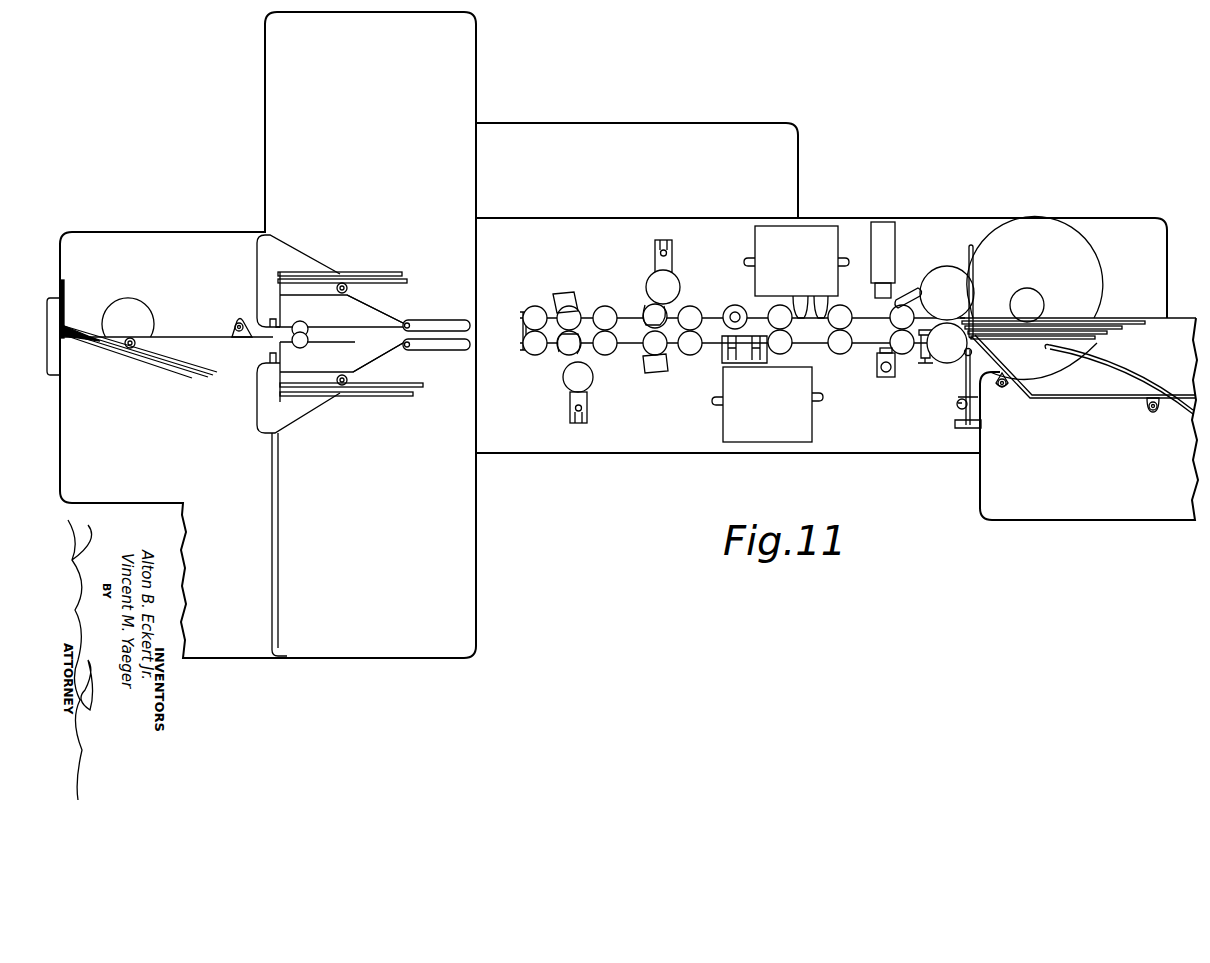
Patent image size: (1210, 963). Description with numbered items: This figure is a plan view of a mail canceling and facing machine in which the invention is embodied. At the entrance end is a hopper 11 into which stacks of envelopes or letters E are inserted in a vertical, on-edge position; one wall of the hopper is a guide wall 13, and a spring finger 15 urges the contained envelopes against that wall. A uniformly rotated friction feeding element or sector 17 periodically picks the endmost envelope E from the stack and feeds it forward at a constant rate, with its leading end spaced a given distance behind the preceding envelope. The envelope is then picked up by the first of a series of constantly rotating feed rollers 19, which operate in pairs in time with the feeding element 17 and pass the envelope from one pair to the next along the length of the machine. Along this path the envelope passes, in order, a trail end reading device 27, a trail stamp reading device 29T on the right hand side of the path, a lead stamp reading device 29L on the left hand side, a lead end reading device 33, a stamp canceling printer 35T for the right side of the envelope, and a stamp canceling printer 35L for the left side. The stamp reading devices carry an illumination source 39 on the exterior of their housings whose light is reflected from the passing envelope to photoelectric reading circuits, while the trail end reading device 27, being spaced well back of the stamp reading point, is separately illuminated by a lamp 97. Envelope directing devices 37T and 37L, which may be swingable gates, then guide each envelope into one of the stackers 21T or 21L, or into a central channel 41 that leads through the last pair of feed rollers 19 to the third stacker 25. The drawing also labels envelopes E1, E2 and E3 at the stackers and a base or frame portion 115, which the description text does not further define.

The hopper 11 is at (1075, 391).
The guide wall 13 is at (1137, 320).
The spring finger 15 is at (1148, 373).
The friction feeding element 17 is at (950, 275).
The feed rollers 19 is at (297, 332).
The stacker 21L is at (287, 288).
The stacker 21T is at (290, 380).
The stacker 25 is at (177, 343).
The trail end reading device 27 is at (887, 378).
The lead stamp reading device 29L is at (778, 434).
The trail stamp reading device 29T is at (818, 238).
The lead end reading device 33 is at (734, 314).
The stamp canceling printer 35L is at (567, 358).
The stamp canceling printer 35T is at (648, 308).
The envelope directing device 37L is at (447, 318).
The envelope directing device 37T is at (436, 347).
The illumination source 39 is at (718, 348).
The central channel 41 is at (342, 335).
The lamp 97 is at (885, 233).
The base plate 115 is at (864, 448).
The envelope E is at (1012, 335).
The envelope in upper magazine E1 is at (388, 277).
The envelope in lower magazine E2 is at (378, 397).
The discharged envelopes E3 is at (160, 370).